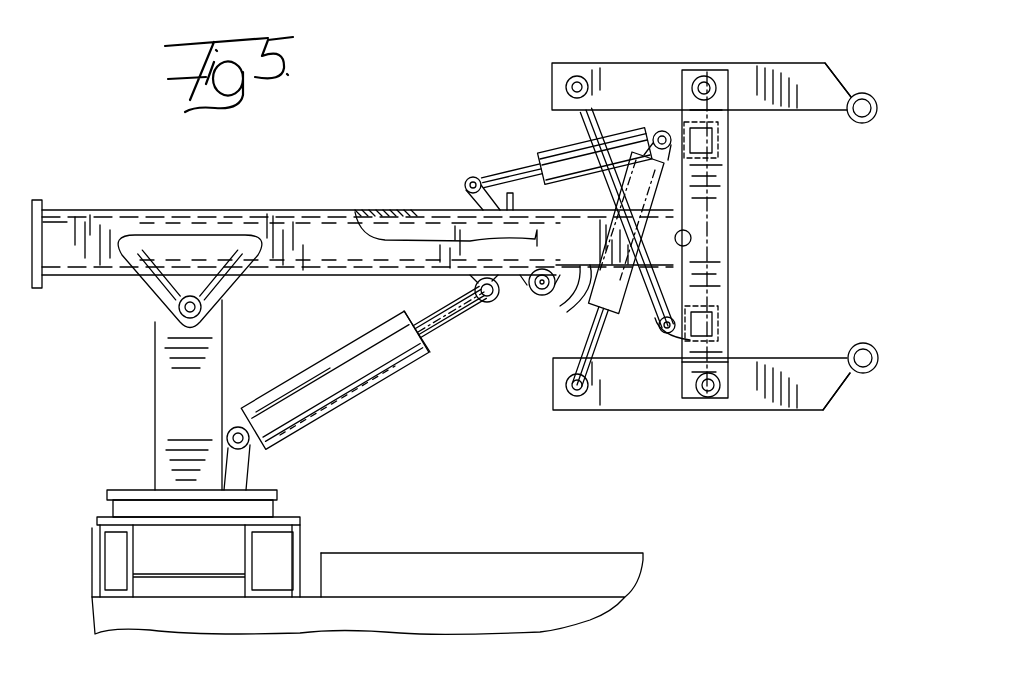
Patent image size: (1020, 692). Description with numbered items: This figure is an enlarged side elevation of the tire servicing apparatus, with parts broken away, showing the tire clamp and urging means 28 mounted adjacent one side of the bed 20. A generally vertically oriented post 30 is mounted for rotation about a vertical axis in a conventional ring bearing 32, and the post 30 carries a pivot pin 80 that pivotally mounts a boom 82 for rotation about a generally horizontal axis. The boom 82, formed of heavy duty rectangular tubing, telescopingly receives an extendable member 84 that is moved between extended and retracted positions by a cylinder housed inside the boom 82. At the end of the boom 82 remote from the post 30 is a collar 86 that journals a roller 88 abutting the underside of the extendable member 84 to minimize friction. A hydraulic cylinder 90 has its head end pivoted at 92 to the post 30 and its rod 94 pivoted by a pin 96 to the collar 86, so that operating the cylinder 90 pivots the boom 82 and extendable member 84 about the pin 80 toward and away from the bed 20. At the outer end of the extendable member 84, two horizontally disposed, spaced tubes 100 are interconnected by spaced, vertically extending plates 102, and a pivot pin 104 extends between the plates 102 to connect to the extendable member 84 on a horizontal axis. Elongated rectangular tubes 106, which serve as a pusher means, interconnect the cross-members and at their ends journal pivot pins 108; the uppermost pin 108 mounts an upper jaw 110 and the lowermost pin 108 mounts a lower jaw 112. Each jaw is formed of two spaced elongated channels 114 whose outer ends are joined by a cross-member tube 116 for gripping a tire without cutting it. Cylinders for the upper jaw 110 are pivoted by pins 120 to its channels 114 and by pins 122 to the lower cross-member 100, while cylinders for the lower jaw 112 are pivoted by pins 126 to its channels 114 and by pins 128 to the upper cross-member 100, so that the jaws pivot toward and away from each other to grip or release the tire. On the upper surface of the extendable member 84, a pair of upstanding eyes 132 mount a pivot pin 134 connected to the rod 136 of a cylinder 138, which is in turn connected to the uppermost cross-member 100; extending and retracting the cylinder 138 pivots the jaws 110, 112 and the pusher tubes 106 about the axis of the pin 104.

The bed 20 is at (518, 553).
The tire clamp and urging means 28 is at (362, 146).
The post 30 is at (168, 391).
The ring bearing 32 is at (270, 502).
The pivot pin 80 is at (178, 311).
The boom 82 is at (282, 210).
The extendable member 84 is at (580, 290).
The collar 86 is at (437, 332).
The roller 88 is at (546, 298).
The hydraulic cylinder 90 is at (336, 404).
The head end pivot 92 is at (235, 428).
The rod 94 is at (441, 345).
The pin 96 is at (474, 291).
The tubes 100 is at (718, 139).
The plates 102 is at (676, 190).
The pivot pin 104 is at (728, 235).
The rectangular tubes 106 is at (690, 366).
The pivot pins 108 is at (705, 76).
The upper jaw 110 is at (779, 62).
The lower jaw 112 is at (797, 408).
The channels 114 is at (830, 75).
The tube 116 is at (876, 121).
The pivot pins 120 is at (578, 76).
The pivot pins 122 is at (664, 336).
The pins 126 is at (577, 397).
The pins 128 is at (662, 130).
The eyes 132 is at (470, 208).
The pivot pin 134 is at (467, 178).
The rod 136 is at (506, 173).
The cylinder 138 is at (562, 147).